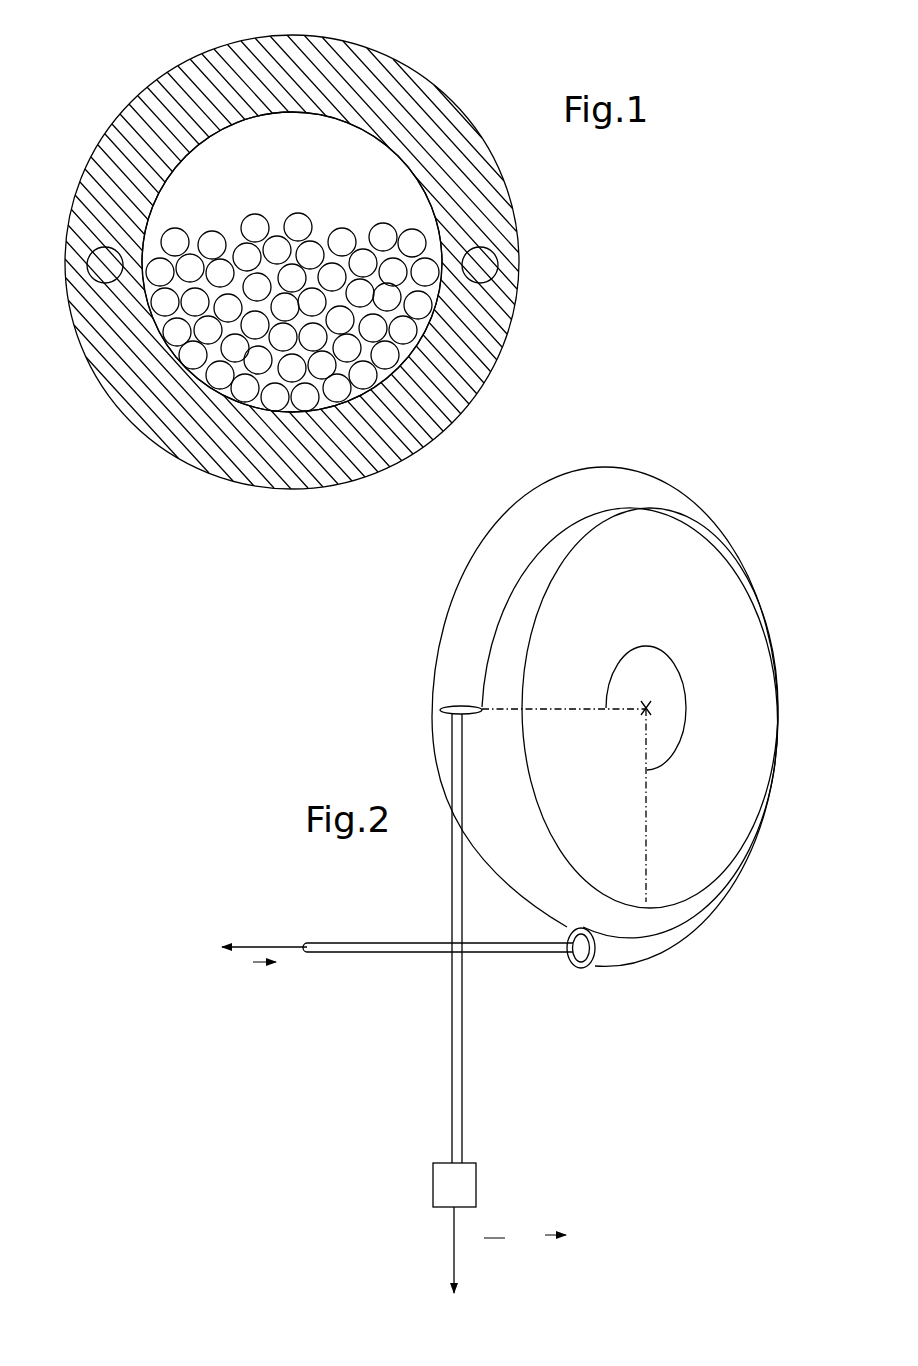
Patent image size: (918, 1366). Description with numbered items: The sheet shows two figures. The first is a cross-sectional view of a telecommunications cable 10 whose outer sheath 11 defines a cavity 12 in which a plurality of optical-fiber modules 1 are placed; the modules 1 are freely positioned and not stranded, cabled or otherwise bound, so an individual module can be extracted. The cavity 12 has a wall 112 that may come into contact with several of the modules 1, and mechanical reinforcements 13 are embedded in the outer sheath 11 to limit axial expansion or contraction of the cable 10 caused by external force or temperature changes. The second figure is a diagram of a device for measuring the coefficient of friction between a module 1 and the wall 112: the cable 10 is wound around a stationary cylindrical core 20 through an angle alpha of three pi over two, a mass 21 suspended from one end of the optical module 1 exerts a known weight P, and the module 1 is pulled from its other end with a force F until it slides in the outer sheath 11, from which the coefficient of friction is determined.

In FIG. 1, the optical-fiber module 1 is at (394, 219).
In FIG. 2, the optical-fiber module 1 is at (465, 1008).
In FIG. 1, the telecommunications cable 10 is at (350, 248).
In FIG. 1, the outer sheath 11 is at (478, 320).
In FIG. 2, the outer sheath 11 is at (540, 502).
In FIG. 1, the wall 112 is at (273, 119).
In FIG. 1, the cavity 12 is at (333, 188).
In FIG. 1, the mechanical reinforcements 13 is at (102, 267).
In FIG. 2, the stationary cylindrical core 20 is at (634, 704).
In FIG. 2, the mass 21 is at (433, 1172).